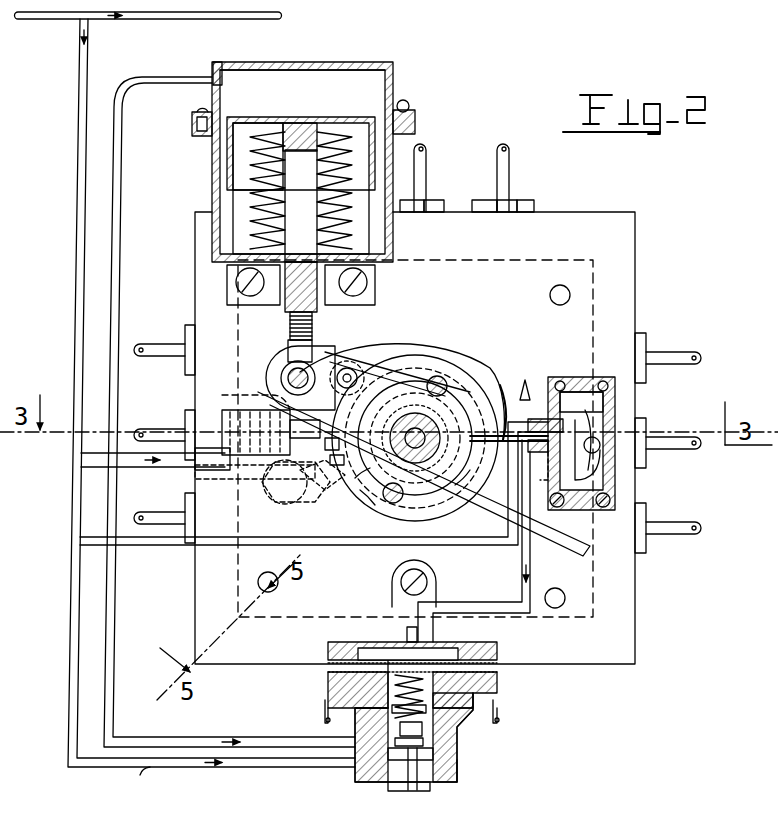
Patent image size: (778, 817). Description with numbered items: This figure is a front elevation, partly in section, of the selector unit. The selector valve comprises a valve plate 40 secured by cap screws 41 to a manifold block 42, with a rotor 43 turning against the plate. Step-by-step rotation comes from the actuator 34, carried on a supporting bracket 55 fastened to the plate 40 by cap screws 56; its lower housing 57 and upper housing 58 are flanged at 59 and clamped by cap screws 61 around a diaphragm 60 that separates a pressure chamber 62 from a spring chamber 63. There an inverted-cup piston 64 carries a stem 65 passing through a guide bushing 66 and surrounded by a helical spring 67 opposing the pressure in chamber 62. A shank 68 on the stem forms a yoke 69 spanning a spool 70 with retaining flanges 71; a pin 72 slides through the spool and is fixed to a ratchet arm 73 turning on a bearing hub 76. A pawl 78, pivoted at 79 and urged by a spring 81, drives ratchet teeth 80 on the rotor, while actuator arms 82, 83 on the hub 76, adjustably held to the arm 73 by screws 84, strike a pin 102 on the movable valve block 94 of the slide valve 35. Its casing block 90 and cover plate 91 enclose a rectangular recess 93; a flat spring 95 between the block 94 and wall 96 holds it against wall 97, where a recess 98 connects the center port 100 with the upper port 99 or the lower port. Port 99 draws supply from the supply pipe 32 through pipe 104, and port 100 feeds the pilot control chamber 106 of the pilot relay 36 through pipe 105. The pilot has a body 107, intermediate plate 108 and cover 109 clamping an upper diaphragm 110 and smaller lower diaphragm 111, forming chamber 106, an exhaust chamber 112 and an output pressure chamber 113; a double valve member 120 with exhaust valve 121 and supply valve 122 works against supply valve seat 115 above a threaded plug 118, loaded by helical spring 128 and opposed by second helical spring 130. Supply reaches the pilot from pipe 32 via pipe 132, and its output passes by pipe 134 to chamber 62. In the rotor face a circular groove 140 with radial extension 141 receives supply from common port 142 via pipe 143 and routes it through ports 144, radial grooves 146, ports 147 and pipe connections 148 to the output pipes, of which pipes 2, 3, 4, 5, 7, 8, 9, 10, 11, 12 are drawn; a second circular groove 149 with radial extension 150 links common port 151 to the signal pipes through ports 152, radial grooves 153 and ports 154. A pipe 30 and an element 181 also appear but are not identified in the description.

The output pipe 2 is at (147, 345).
The output pipe 3 is at (148, 430).
The output pipe 4 is at (147, 512).
The output pipe 5 is at (320, 716).
The output pipe 7 is at (505, 716).
The output pipe 8 is at (680, 533).
The output pipe 9 is at (688, 448).
The output pipe 10 is at (685, 358).
The output pipe 11 is at (509, 168).
The output pipe 12 is at (426, 168).
The supply conduit 30 is at (45, 19).
The supply pipe 32 is at (75, 197).
The actuator 34 is at (304, 147).
The slide valve 35 is at (607, 434).
The pilot relay 36 is at (405, 717).
The valve plate 40 is at (642, 240).
The cap screws 41 is at (550, 297).
The manifold block 42 is at (612, 285).
The rotor 43 is at (430, 355).
The supporting bracket 55 is at (230, 282).
The cap screws 56 is at (240, 296).
The lower housing 57 is at (215, 195).
The upper housing 58 is at (245, 66).
The flanges 59 is at (196, 122).
The diaphragm 60 is at (258, 117).
The cap screws 61 is at (203, 110).
The pressure chamber 62 is at (328, 72).
The spring chamber 63 is at (372, 228).
The piston 64 is at (232, 165).
The stem 65 is at (300, 222).
The guide bushing 66 is at (290, 305).
The helical spring 67 is at (325, 218).
The shank 68 is at (290, 330).
The yoke 69 is at (280, 362).
The spool 70 is at (288, 378).
The retaining flanges 71 is at (285, 388).
The pin 72 is at (300, 351).
The ratchet arm 73 is at (322, 355).
The bearing hub 76 is at (435, 415).
The pawl 78 is at (305, 423).
The pivot 79 is at (348, 368).
The ratchet teeth 80 is at (498, 390).
The spring 81 is at (360, 365).
The actuator arm 82 is at (521, 382).
The actuator arm 83 is at (572, 548).
The screws 84 is at (445, 380).
The casing block 90 is at (603, 378).
The cover plate 91 is at (604, 506).
The rectangular recess 93 is at (583, 377).
The movable valve block 94 is at (555, 418).
The flat spring 95 is at (598, 402).
The wall 96 is at (602, 425).
The wall 97 is at (550, 395).
The recess 98 is at (562, 505).
The upper port 99 is at (548, 425).
The center port 100 is at (503, 445).
The pin 102 is at (596, 450).
The pipe 104 is at (97, 543).
The pipe 105 is at (496, 605).
The pilot control chamber 106 is at (455, 650).
The body 107 is at (457, 778).
The intermediate plate 108 is at (330, 682).
The cover 109 is at (330, 648).
The upper diaphragm 110 is at (365, 652).
The lower diaphragm 111 is at (322, 700).
The exhaust chamber 112 is at (500, 700).
The output pressure chamber 113 is at (462, 735).
The supply valve seat 115 is at (418, 782).
The threaded plug 118 is at (405, 785).
The double valve member 120 is at (395, 738).
The exhaust valve 121 is at (385, 705).
The supply valve 122 is at (390, 760).
The helical spring 128 is at (418, 665).
The second helical spring 130 is at (425, 725).
The pipe 132 is at (148, 781).
The pipe 134 is at (130, 80).
The circular groove 140 is at (445, 510).
The radial extension groove 141 is at (316, 475).
The common port 142 is at (232, 480).
The pipe 143 is at (85, 468).
The ports 144 is at (335, 461).
The radial grooves 146 is at (322, 443).
The ports 147 is at (280, 428).
The pipe connections 148 is at (222, 394).
The circular groove 149 is at (424, 455).
The radial extension groove 150 is at (372, 490).
The common port 151 is at (470, 485).
The ports 152 is at (355, 468).
The radial grooves 153 is at (296, 503).
The ports 154 is at (272, 500).
The passage 181 is at (535, 475).